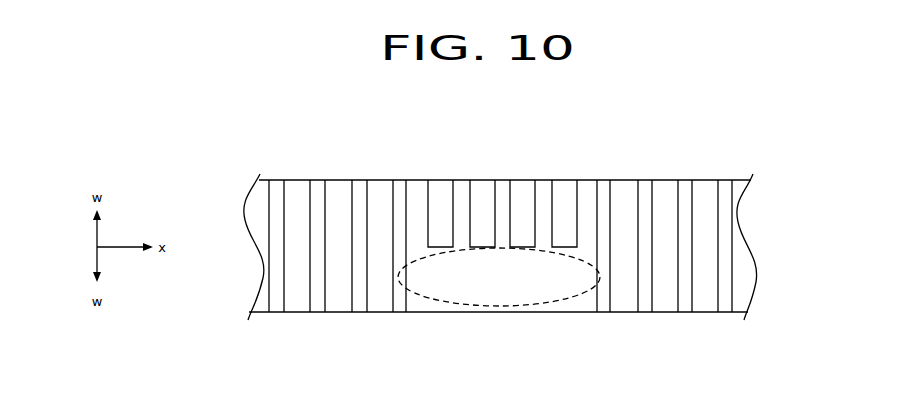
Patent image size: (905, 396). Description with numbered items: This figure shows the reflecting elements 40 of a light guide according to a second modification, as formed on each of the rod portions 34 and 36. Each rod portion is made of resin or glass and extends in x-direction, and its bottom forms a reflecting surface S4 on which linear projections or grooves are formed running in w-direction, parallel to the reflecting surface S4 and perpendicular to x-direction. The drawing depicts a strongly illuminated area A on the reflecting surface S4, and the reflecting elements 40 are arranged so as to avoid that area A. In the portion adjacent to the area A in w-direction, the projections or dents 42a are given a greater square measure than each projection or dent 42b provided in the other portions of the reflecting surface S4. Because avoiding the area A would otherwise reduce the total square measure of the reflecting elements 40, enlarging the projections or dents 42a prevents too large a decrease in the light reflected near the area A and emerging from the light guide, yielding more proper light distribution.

The reflecting elements 40 is at (688, 137).
The rod portion 34 is at (168, 122).
The rod portion 36 is at (422, 205).
The reflecting surface S4 is at (337, 187).
The projections or dents 42a is at (468, 191).
The projection or dent 42b is at (634, 198).
The area A is at (489, 298).